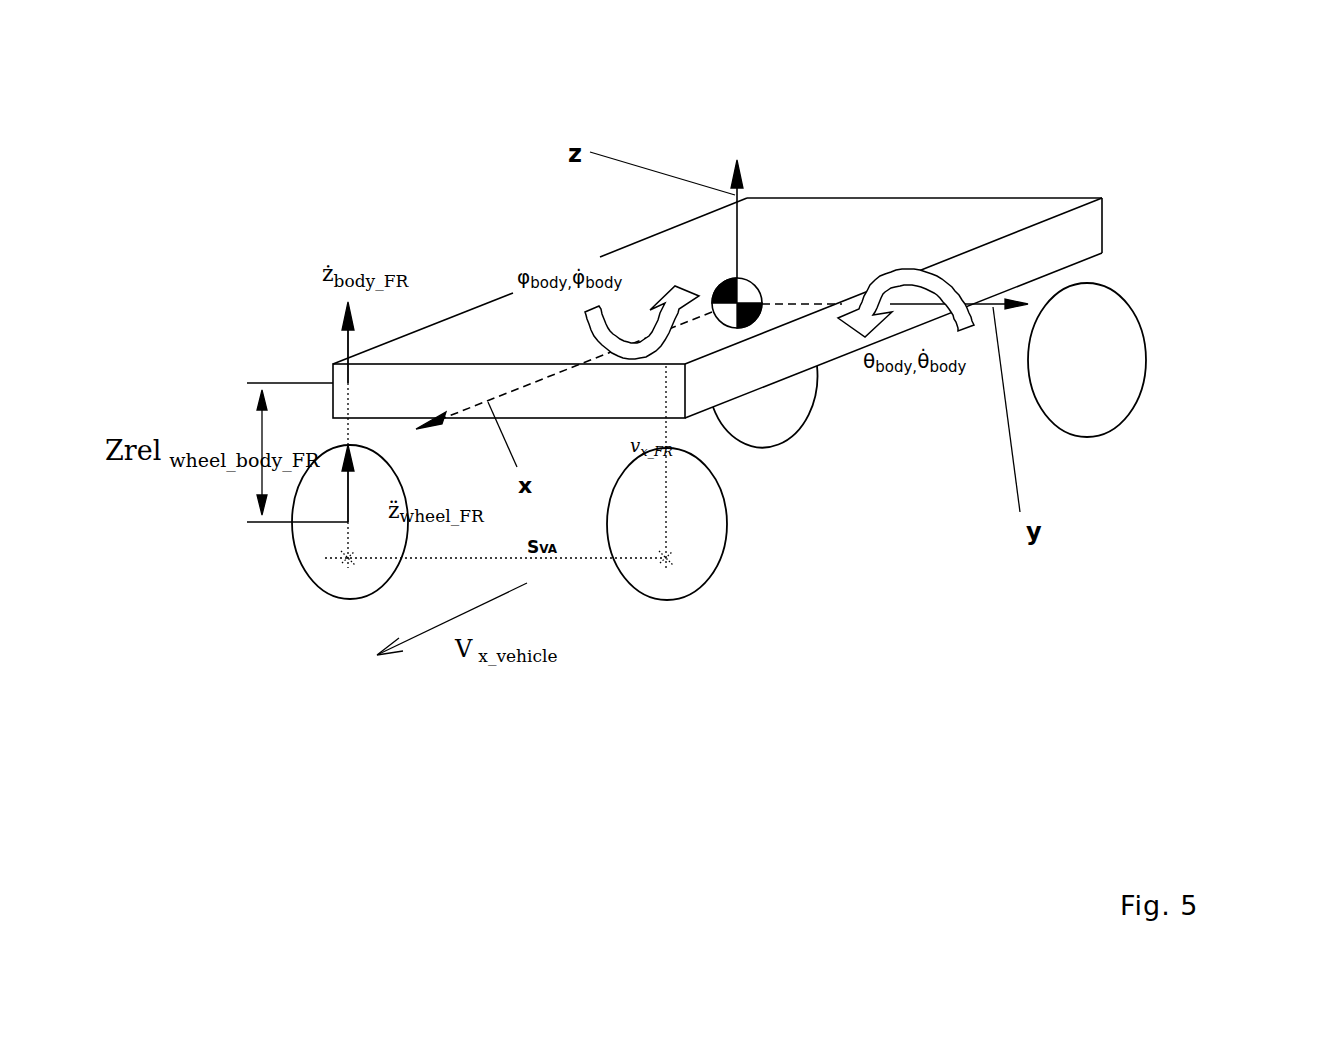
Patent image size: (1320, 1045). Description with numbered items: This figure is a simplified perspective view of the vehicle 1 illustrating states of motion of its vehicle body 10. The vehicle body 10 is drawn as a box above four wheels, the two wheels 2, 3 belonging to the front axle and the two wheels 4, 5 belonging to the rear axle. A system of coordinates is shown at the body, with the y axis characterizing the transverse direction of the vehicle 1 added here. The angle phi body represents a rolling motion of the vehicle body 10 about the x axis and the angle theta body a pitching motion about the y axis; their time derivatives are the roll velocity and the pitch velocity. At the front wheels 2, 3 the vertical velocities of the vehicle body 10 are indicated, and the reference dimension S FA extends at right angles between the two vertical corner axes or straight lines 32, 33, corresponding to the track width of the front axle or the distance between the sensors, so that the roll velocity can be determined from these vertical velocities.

The vehicle 1 is at (1226, 81).
The vehicle body 10 is at (888, 197).
The wheel 2 is at (705, 580).
The wheel 3 is at (300, 565).
The wheel 4 is at (1146, 359).
The wheel 5 is at (798, 418).
The vertical corner axis 32 is at (667, 488).
The vertical corner axis 33 is at (343, 540).